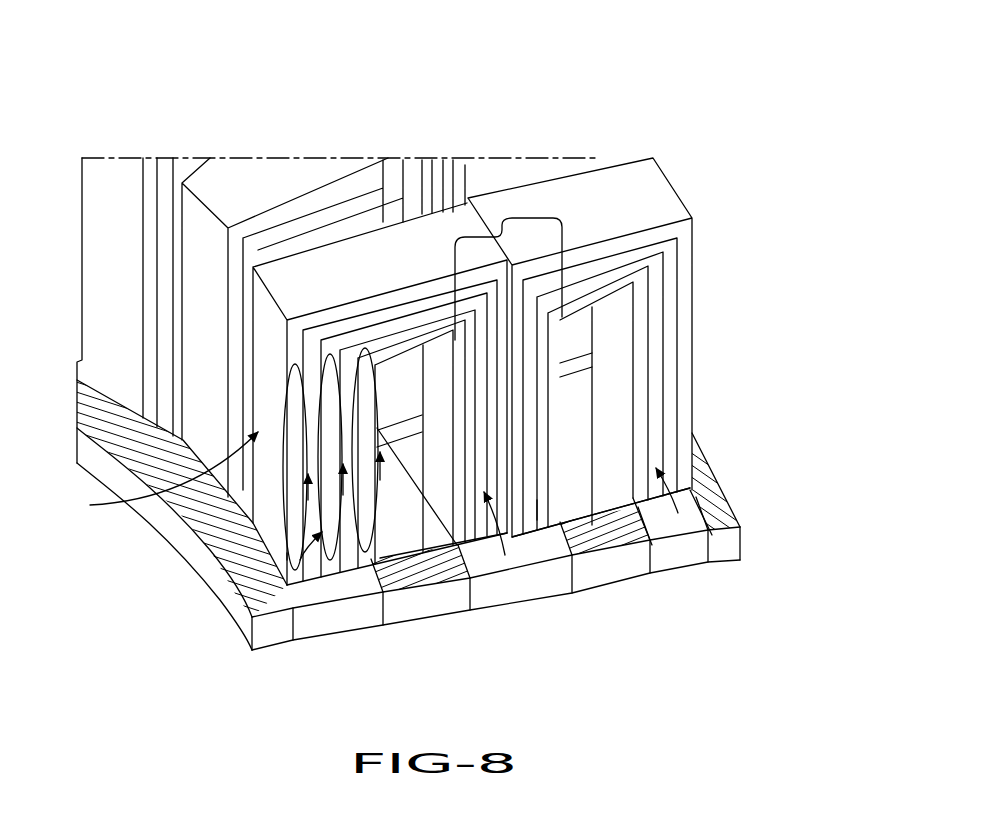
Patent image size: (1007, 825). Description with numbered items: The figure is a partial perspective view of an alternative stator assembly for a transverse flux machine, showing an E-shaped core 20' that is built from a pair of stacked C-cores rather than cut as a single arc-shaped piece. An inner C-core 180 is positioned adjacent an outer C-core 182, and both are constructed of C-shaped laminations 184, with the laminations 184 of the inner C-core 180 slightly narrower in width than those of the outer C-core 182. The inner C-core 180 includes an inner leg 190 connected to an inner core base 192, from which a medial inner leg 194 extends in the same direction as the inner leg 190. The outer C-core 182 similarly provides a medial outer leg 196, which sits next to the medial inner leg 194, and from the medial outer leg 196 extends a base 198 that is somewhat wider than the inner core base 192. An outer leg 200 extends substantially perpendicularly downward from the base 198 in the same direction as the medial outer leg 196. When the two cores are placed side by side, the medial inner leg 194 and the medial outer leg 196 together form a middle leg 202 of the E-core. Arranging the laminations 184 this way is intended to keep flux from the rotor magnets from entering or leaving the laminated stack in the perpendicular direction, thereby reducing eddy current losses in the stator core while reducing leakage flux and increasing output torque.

The E-shaped core 20' is at (734, 72).
The inner C-core 180 is at (146, 476).
The outer C-core 182 is at (702, 296).
The laminations 184 is at (293, 553).
The inner leg 190 is at (328, 485).
The inner core base 192 is at (407, 325).
The medial inner leg 194 is at (472, 518).
The medial outer leg 196 is at (543, 497).
The base 198 is at (593, 292).
The outer leg 200 is at (667, 402).
The middle leg 202 is at (505, 225).